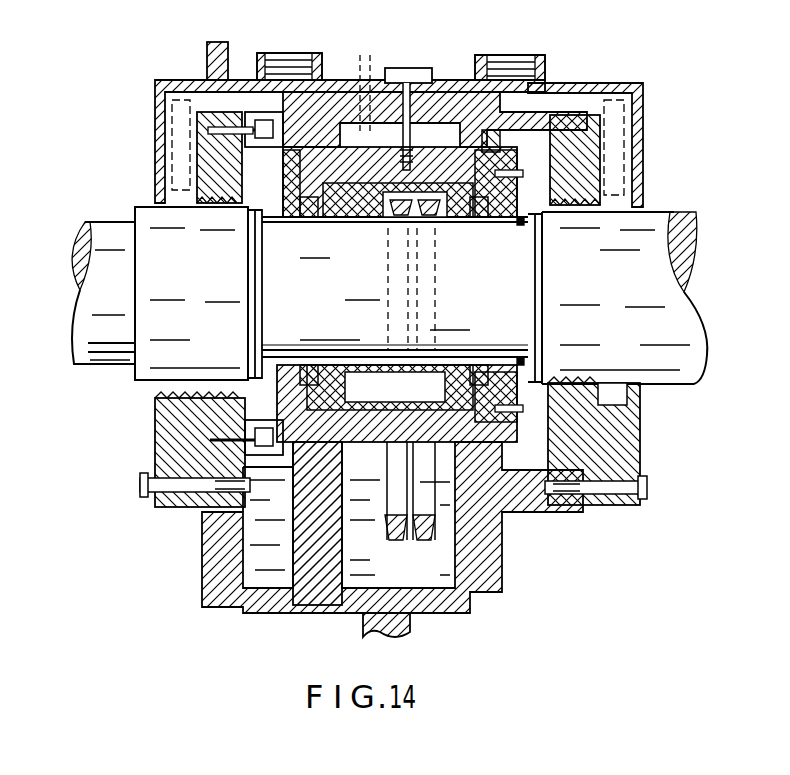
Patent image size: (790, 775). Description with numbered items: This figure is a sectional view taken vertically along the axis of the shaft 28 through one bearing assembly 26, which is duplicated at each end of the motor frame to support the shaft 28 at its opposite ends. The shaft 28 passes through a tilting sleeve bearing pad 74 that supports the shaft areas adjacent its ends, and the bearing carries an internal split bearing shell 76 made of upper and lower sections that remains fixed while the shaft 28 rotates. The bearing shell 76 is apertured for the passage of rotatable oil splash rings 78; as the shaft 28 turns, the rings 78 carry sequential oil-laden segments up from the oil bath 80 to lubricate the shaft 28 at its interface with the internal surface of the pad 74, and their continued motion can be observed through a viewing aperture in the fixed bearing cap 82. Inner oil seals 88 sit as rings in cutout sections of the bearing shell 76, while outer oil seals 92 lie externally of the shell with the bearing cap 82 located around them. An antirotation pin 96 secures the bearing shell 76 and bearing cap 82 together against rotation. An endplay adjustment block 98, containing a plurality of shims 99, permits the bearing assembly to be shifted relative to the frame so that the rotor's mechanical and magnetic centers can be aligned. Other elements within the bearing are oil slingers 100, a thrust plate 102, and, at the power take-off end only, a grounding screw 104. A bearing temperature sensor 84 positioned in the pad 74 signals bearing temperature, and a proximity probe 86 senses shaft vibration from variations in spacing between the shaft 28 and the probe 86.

The bearing assembly 26 is at (578, 56).
The shaft 28 is at (374, 297).
The tilting sleeve bearing pad 74 is at (404, 399).
The split bearing shell 76 is at (419, 174).
The oil splash rings 78 is at (404, 217).
The oil bath 80 is at (343, 542).
The bearing cap 82 is at (453, 78).
The bearing temperature sensor 84 is at (392, 360).
The proximity probe 86 is at (404, 217).
The inner oil seals 88 is at (309, 217).
The outer oil seals 92 is at (204, 177).
The antirotation pin 96 is at (490, 132).
The endplay adjustment block 98 is at (275, 217).
The shims 99 is at (266, 150).
The oil slingers 100 is at (266, 272).
The thrust plate 102 is at (518, 225).
The grounding screw 104 is at (405, 68).